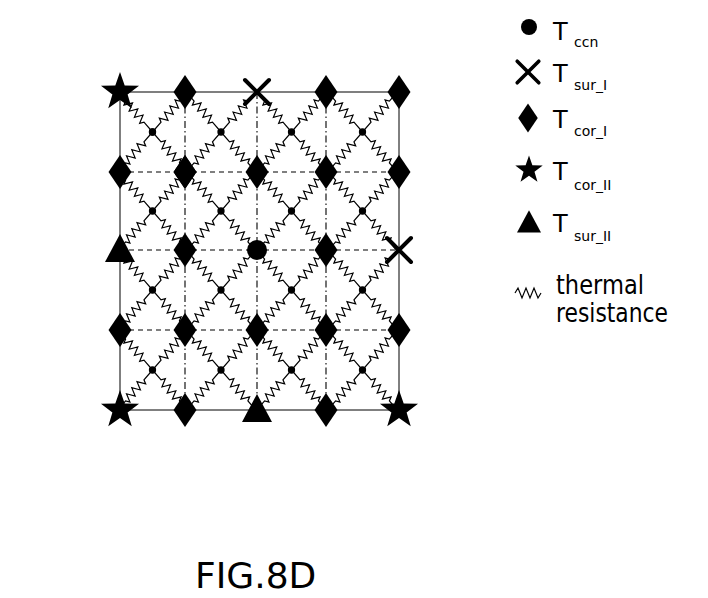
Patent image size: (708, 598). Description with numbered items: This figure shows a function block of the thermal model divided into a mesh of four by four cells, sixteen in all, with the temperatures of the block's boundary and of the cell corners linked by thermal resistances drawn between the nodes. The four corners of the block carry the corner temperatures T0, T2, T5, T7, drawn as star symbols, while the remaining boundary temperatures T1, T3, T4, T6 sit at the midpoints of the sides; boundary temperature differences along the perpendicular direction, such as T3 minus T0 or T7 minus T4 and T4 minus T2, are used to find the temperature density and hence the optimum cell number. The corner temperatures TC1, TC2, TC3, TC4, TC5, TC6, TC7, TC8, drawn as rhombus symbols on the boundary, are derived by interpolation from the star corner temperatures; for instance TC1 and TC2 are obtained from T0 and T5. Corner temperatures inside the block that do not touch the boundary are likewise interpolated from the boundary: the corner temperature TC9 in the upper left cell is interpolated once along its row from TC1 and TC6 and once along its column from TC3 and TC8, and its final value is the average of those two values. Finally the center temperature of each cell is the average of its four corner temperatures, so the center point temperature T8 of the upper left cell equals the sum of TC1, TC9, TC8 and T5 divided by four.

The corner temperature T0 is at (120, 426).
The boundary temperature T1 is at (259, 428).
The corner temperature T2 is at (400, 427).
The boundary temperature T3 is at (103, 253).
The boundary temperature T4 is at (417, 256).
The corner temperature T5 is at (119, 74).
The boundary temperature T6 is at (256, 77).
The corner temperature T7 is at (401, 77).
The temperature of the center point T8 is at (151, 131).
The corner temperature TC1 is at (113, 179).
The corner temperature TC2 is at (112, 342).
The corner temperature TC3 is at (190, 420).
The corner temperature TC4 is at (332, 418).
The corner temperature TC5 is at (408, 334).
The corner temperature TC6 is at (410, 184).
The corner temperature TC7 is at (329, 82).
The corner temperature TC8 is at (192, 82).
The corner temperature TC9 is at (176, 176).